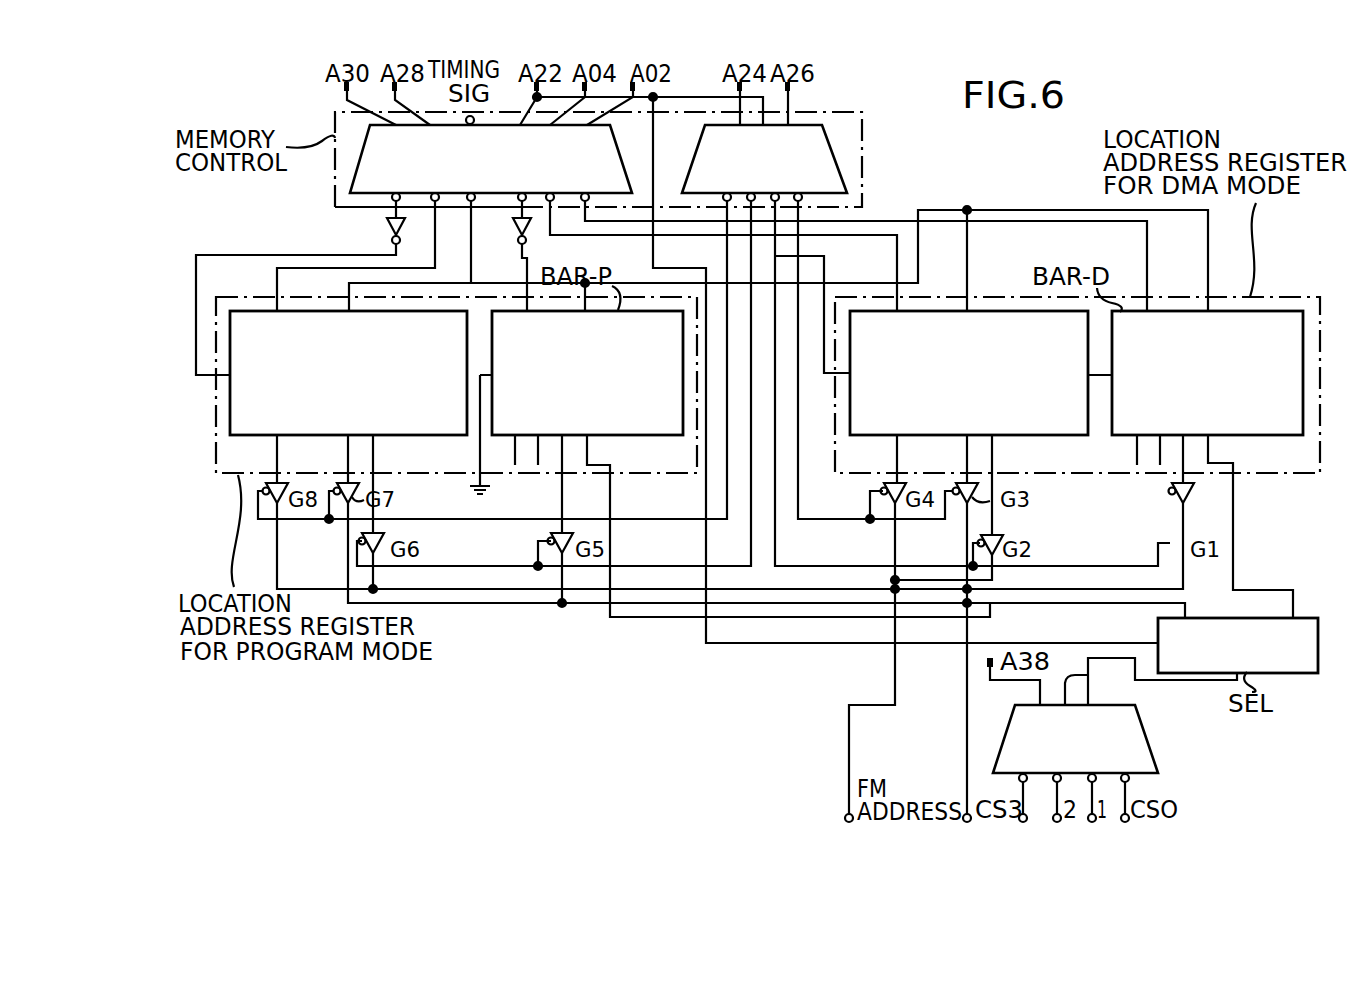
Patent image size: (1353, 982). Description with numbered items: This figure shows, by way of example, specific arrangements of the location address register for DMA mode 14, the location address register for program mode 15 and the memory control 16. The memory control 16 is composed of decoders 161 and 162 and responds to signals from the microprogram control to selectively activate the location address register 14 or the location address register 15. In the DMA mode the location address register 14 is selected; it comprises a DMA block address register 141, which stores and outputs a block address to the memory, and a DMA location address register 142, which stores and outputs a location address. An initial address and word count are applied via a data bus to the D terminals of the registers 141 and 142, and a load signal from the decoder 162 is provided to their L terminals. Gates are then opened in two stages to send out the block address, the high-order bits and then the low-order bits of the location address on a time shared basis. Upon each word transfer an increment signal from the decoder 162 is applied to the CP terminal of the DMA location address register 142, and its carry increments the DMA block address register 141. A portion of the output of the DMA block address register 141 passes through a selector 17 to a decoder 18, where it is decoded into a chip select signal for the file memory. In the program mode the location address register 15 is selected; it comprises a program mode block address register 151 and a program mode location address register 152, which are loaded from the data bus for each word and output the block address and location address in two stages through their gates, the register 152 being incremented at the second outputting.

The location address register for DMA mode 14 is at (1288, 477).
The location address register for program mode 15 is at (212, 469).
The memory control 16 is at (862, 160).
The selector 17 is at (1242, 618).
The decoder 18 is at (1158, 745).
The DMA block address register 141 is at (1192, 312).
The DMA location address register 142 is at (945, 438).
The program mode block address register 151 is at (645, 437).
The program mode location address register 152 is at (322, 438).
The decoder 161 is at (845, 175).
The decoder 162 is at (357, 170).